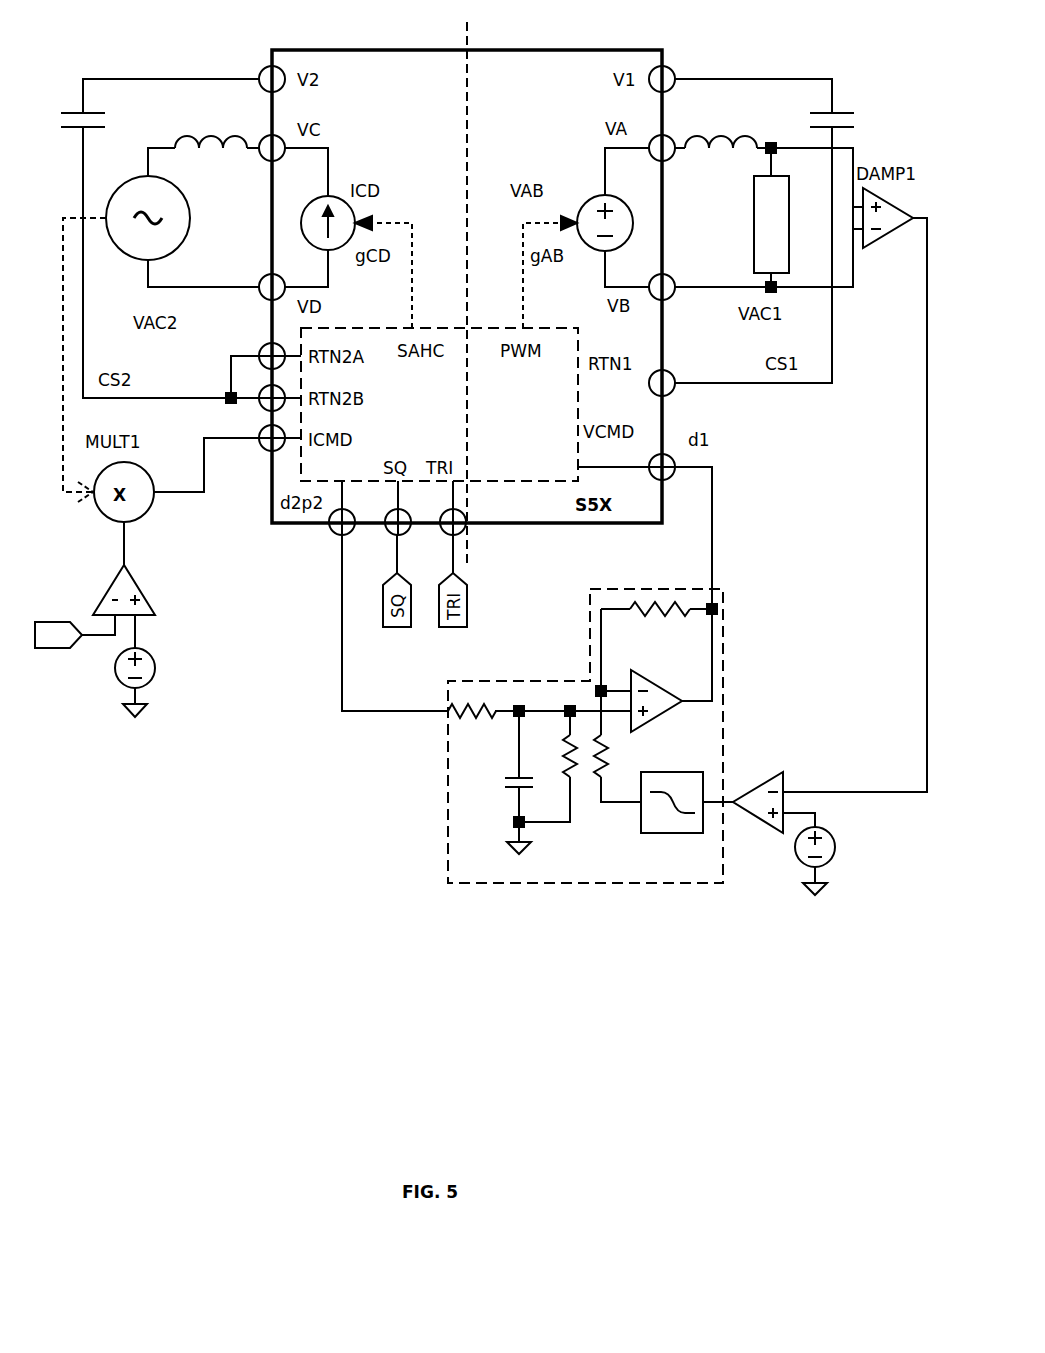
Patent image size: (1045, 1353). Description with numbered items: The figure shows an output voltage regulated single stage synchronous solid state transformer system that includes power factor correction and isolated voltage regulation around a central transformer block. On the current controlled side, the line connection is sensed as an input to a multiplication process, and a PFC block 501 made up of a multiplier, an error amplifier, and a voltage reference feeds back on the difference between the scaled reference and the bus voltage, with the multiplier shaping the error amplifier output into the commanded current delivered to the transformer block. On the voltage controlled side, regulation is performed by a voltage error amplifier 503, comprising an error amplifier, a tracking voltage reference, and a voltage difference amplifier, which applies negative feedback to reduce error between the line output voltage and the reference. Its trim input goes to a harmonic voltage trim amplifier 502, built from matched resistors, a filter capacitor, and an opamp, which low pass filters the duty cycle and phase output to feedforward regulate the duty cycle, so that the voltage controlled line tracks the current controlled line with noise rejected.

The PFC block 501 is at (100, 733).
The harmonic voltage trim amplifier 502 is at (424, 786).
The voltage error amplifier 503 is at (870, 764).